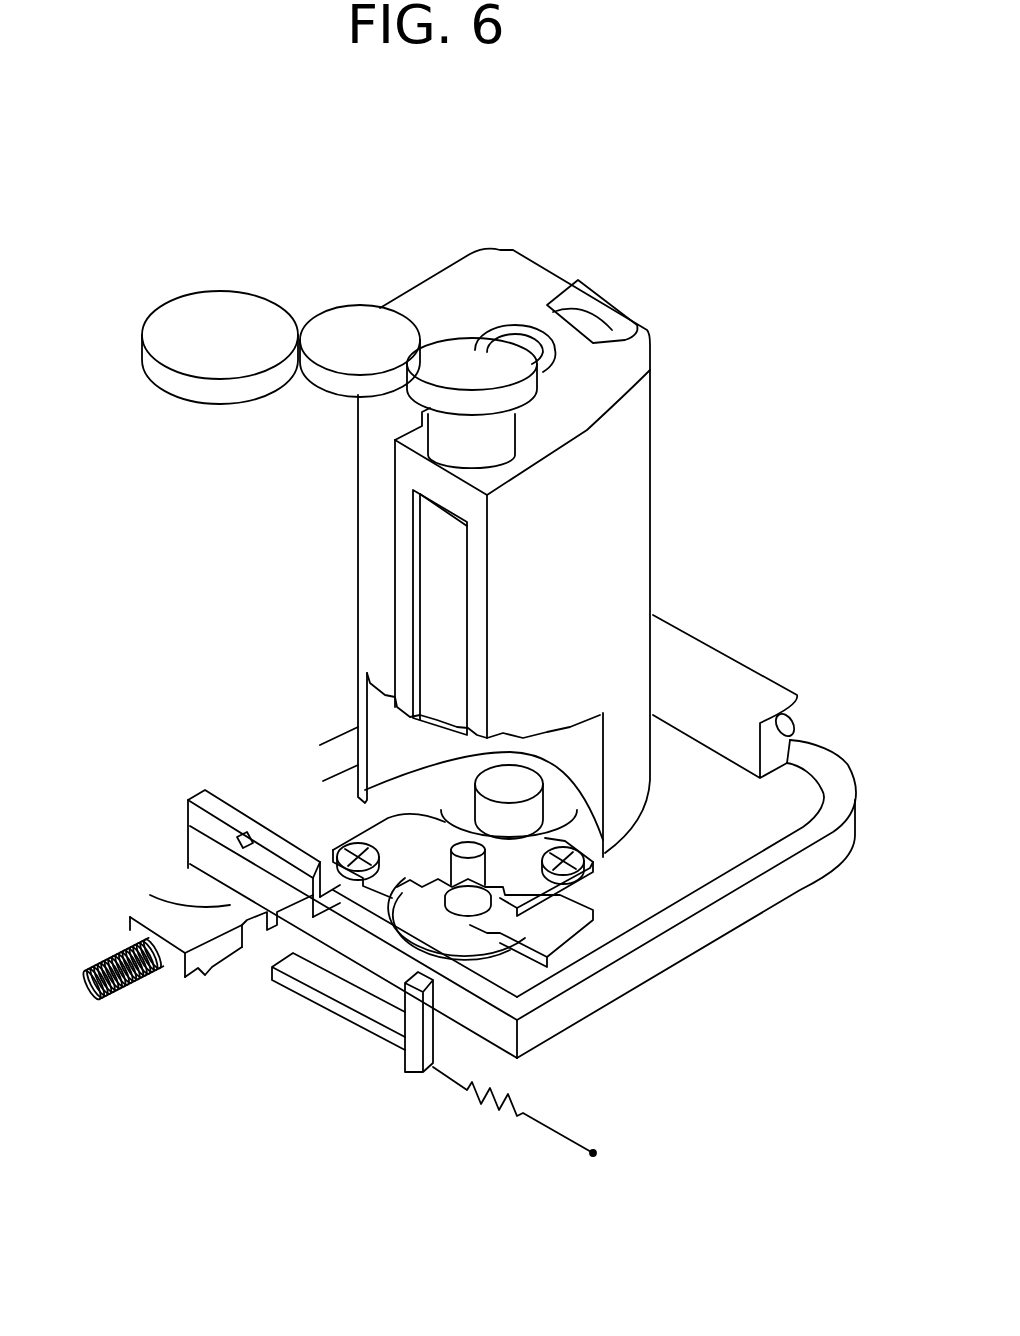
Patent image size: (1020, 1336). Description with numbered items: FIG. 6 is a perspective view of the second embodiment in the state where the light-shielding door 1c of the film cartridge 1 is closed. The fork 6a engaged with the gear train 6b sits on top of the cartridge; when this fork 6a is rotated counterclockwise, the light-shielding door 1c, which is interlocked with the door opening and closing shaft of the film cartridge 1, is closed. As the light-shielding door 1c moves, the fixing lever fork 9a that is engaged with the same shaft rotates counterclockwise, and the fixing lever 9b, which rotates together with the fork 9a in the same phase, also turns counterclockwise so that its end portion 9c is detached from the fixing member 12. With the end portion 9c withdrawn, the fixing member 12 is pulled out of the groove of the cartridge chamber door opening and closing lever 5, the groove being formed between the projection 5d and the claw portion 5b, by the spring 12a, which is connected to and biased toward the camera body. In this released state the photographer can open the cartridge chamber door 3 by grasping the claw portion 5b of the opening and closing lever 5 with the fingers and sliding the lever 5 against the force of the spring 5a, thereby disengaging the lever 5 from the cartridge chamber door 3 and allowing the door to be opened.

The film cartridge 1 is at (638, 434).
The light-shielding door 1c is at (433, 603).
The cartridge chamber door 3 is at (832, 793).
The cartridge chamber door opening and closing lever 5 is at (160, 913).
The spring 5a is at (93, 967).
The claw portion 5b is at (215, 983).
The projection 5d is at (163, 917).
The fork 6a is at (458, 345).
The gear train 6b is at (330, 320).
The fixing lever fork 9a is at (463, 882).
The fixing lever 9b is at (442, 917).
The end portion of the fixing lever 9c is at (550, 933).
The fixing member 12 is at (323, 1005).
The spring 12a is at (560, 1137).